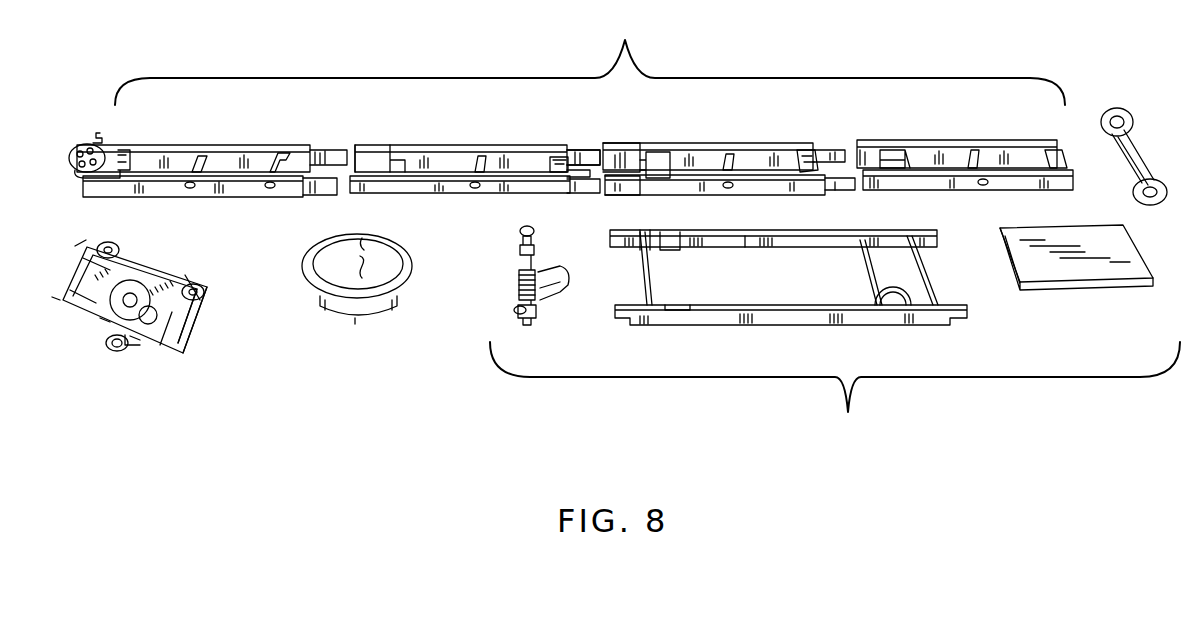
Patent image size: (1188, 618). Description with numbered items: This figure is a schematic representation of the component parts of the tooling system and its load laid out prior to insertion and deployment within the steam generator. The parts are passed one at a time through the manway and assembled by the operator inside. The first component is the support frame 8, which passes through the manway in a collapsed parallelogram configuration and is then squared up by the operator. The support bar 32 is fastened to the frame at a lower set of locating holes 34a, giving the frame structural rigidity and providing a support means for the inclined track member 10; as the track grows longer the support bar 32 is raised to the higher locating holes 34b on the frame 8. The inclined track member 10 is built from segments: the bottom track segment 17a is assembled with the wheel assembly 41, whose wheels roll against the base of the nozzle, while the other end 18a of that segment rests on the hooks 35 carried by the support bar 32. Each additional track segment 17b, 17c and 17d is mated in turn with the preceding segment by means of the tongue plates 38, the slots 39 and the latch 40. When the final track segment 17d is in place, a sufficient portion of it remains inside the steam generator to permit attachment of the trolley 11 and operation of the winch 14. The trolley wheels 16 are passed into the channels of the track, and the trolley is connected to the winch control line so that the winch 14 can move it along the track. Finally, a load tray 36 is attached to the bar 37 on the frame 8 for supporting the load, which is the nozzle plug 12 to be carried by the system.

The support frame 8 is at (835, 396).
The inclined track member 10 is at (590, 56).
The trolley 11 is at (198, 328).
The nozzle plug 12 is at (388, 322).
The winch 14 is at (79, 146).
The trolley wheels 16 is at (200, 286).
The bottom track segment 17a is at (968, 140).
The track segment 17b is at (745, 143).
The track segment 17c is at (466, 145).
The final track segment 17d is at (220, 145).
The end of track segment 18a is at (884, 166).
The support bar 32 is at (518, 316).
The lower set of locating holes 34a is at (863, 306).
The higher locating holes 34b is at (707, 310).
The hooks 35 is at (572, 285).
The load tray 36 is at (1118, 285).
The bar 37 is at (904, 300).
The tongue plates 38 is at (585, 152).
The slots 39 is at (603, 150).
The latch 40 is at (660, 158).
The wheel assembly 41 is at (1143, 87).